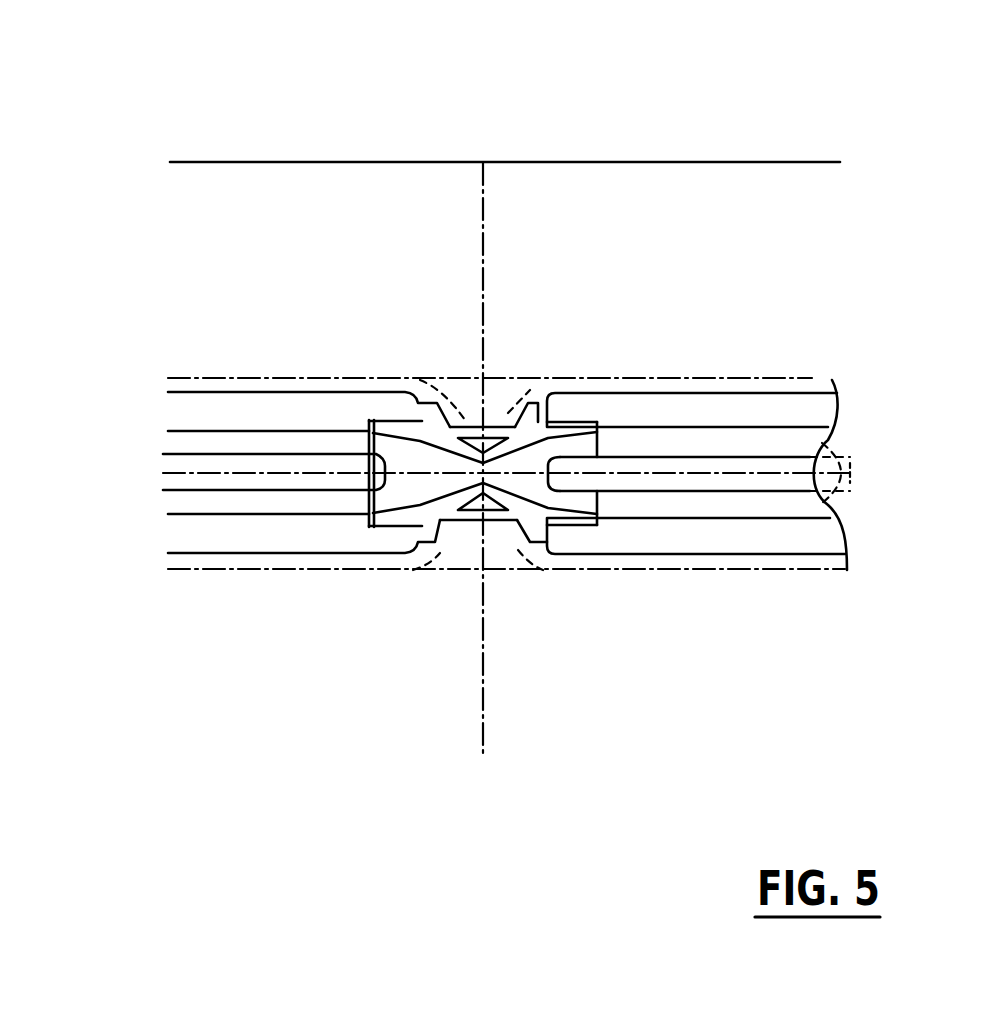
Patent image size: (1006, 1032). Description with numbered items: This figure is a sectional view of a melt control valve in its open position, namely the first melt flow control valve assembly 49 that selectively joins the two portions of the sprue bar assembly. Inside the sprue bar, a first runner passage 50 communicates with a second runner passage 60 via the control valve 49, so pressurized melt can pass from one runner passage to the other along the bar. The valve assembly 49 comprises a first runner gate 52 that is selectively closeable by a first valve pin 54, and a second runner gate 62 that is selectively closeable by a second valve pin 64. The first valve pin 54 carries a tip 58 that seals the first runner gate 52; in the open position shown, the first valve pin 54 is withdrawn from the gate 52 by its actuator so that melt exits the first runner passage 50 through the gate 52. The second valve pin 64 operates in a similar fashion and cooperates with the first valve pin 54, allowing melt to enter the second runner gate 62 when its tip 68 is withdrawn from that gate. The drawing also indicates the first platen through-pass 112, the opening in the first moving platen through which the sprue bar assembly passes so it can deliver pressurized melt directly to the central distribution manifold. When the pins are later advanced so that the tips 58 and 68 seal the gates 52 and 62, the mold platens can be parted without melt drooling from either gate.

The first melt flow control valve assembly 49 is at (510, 228).
The first runner passage 50 is at (697, 393).
The first runner gate 52 is at (512, 525).
The first valve pin 54 is at (757, 457).
The tip 58 is at (548, 447).
The second runner passage 60 is at (222, 556).
The second runner gate 62 is at (468, 513).
The second valve pin 64 is at (293, 453).
The tip 68 is at (387, 458).
The first platen through-pass 112 is at (188, 378).